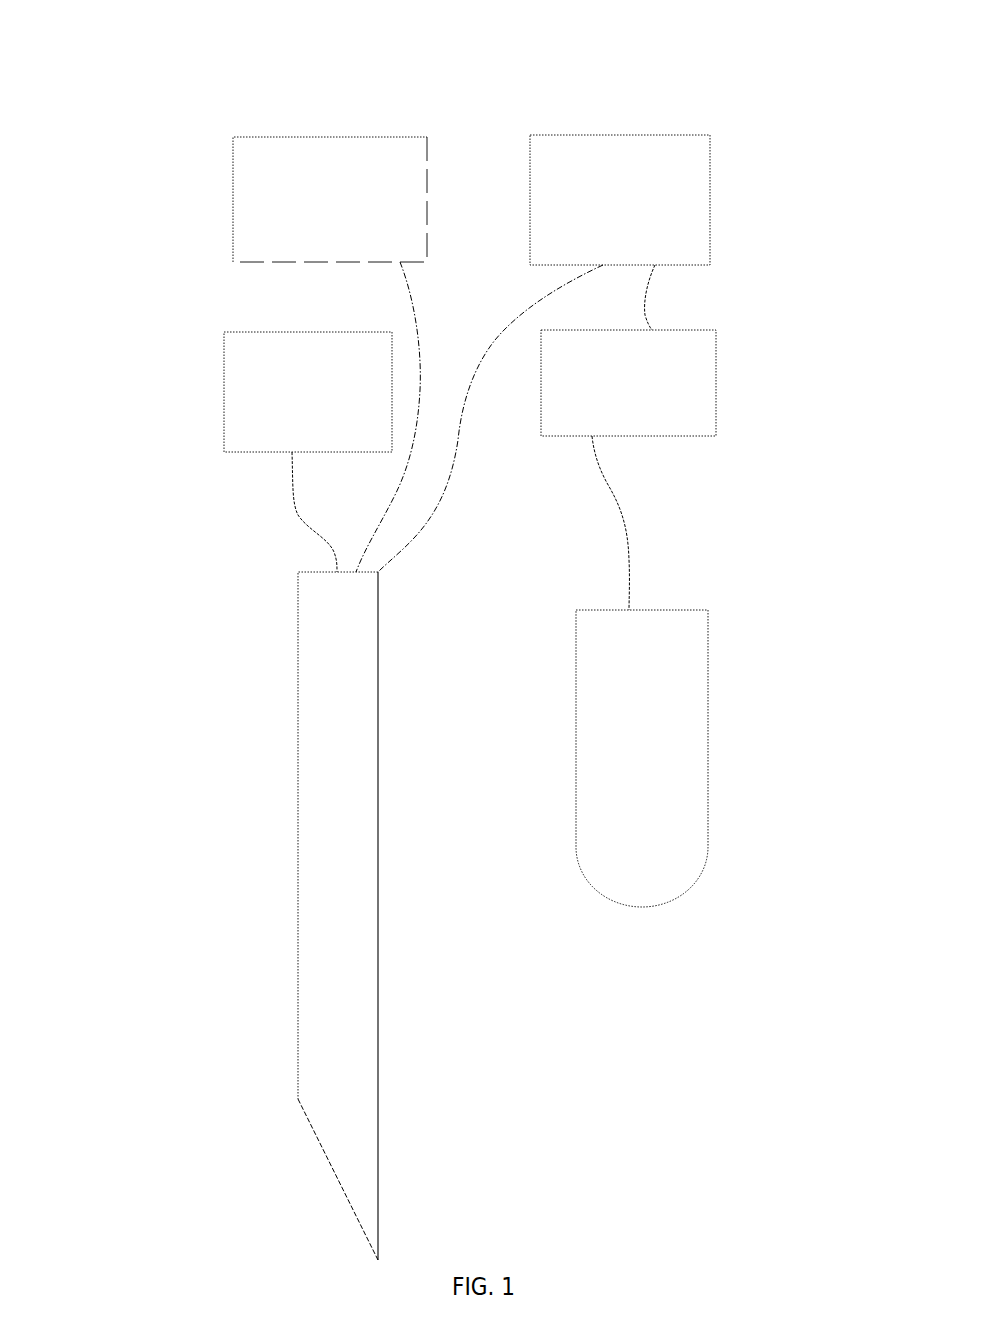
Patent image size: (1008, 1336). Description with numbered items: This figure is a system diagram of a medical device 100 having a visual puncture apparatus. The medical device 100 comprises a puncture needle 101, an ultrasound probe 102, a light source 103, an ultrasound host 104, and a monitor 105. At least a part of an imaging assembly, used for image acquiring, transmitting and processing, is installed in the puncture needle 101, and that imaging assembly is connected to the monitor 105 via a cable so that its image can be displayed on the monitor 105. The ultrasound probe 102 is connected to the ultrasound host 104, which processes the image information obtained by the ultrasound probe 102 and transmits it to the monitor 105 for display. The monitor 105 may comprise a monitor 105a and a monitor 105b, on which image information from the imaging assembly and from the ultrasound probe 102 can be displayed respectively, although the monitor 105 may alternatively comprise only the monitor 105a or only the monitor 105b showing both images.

The medical device 100 is at (218, 543).
The puncture needle 101 is at (313, 813).
The ultrasound probe 102 is at (680, 735).
The light source 103 is at (263, 400).
The ultrasound host 104 is at (698, 397).
The monitor 105 is at (623, 140).
The monitor 105a is at (243, 213).
The monitor 105b is at (662, 225).